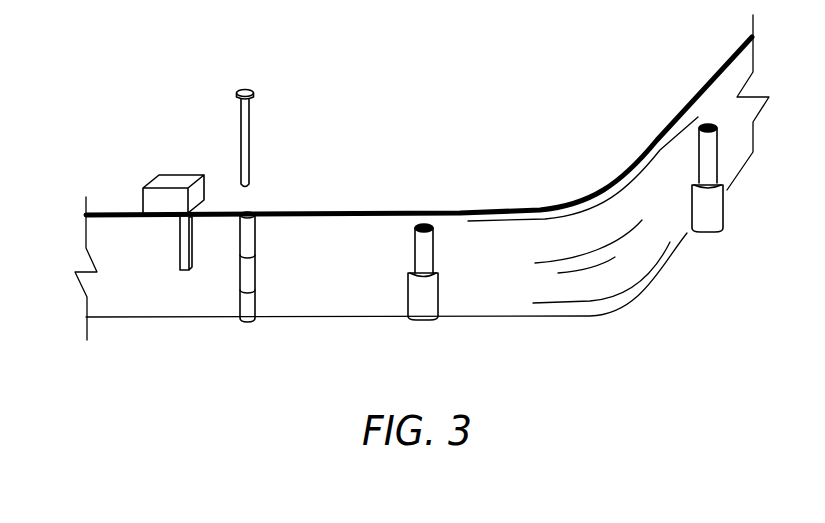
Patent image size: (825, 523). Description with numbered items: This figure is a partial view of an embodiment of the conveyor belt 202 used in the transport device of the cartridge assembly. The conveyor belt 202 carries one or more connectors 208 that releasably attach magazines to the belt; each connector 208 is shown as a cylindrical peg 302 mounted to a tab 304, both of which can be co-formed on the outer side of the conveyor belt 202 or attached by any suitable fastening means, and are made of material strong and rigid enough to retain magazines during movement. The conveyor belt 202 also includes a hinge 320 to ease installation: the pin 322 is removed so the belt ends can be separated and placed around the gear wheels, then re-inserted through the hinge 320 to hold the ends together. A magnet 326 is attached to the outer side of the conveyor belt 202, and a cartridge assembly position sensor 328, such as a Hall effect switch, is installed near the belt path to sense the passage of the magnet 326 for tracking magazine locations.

The conveyor belt 202 is at (640, 293).
The connector 208 is at (727, 197).
The cylindrical peg 302 is at (703, 125).
The tab 304 is at (720, 222).
The hinge 320 is at (235, 305).
The pin 322 is at (253, 113).
The magnet 326 is at (182, 272).
The cartridge assembly position sensor 328 is at (170, 175).